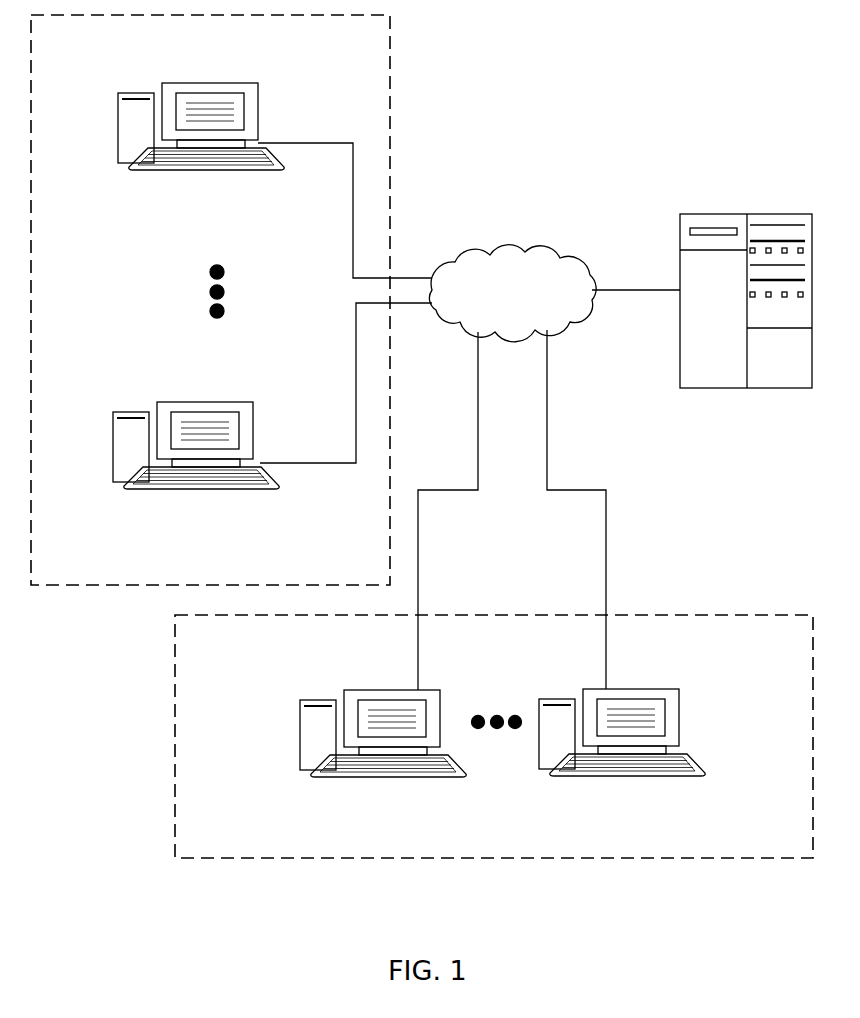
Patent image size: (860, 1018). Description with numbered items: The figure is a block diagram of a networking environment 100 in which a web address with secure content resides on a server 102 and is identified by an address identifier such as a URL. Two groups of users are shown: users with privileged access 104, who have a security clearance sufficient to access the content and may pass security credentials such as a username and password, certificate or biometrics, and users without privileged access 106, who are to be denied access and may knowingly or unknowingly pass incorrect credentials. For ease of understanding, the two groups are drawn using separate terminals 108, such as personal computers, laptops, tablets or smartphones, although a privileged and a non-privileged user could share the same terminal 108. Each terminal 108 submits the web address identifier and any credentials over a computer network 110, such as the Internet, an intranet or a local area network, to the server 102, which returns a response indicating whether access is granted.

The networking environment 100 is at (505, 57).
The server 102 is at (700, 214).
The users with privileged access 104 is at (220, 847).
The users without privileged access 106 is at (73, 574).
The terminal 108 is at (237, 83).
The computer network 110 is at (515, 253).